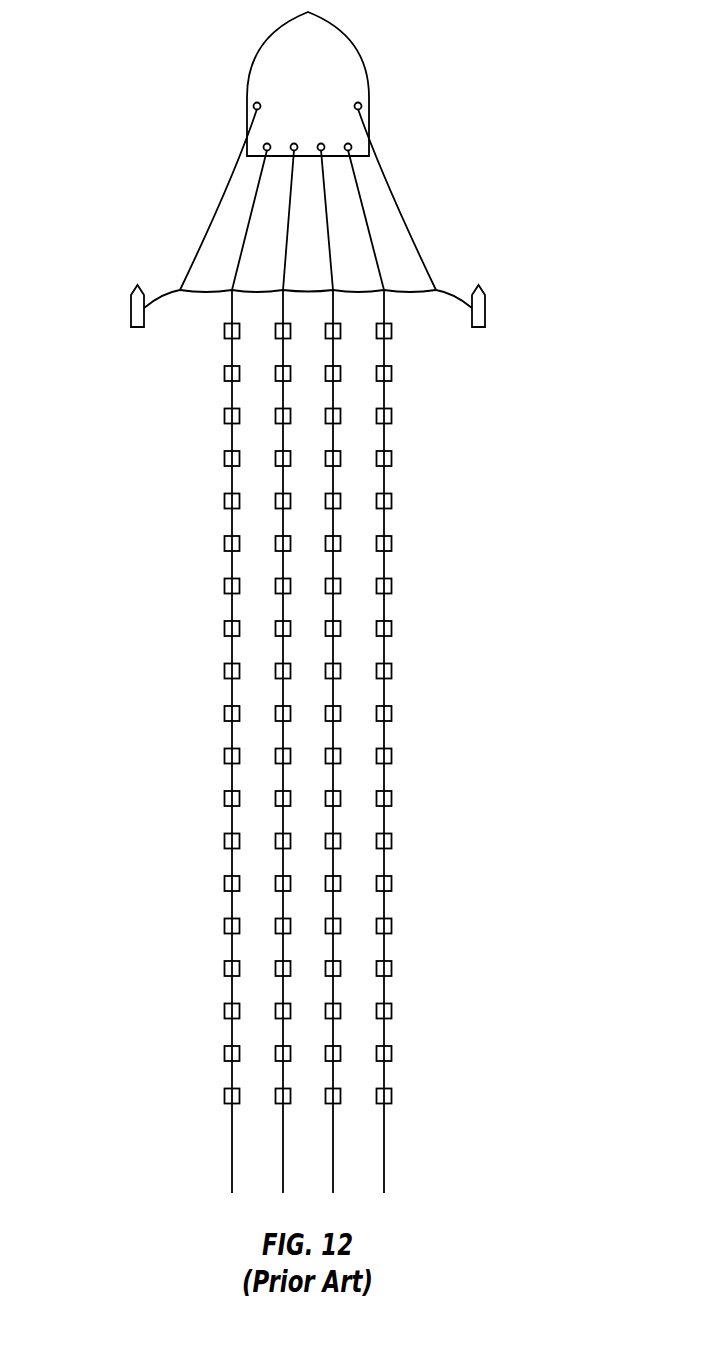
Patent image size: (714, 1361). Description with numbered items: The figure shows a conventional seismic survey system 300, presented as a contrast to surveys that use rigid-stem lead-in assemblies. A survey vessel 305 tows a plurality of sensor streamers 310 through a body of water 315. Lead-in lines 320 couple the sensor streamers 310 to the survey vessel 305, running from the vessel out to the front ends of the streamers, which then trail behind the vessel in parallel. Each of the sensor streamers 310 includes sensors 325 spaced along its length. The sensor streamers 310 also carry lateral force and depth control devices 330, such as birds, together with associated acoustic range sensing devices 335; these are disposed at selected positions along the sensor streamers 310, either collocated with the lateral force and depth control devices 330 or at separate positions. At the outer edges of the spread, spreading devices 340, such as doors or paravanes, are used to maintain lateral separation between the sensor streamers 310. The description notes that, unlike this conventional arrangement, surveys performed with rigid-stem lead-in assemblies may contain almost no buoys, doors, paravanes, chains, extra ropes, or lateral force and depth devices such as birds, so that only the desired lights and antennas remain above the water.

The seismic survey system 300 is at (441, 78).
The survey vessel 305 is at (343, 35).
The sensor streamers 310 is at (283, 300).
The body of water 315 is at (205, 92).
The lead-in lines 320 is at (287, 233).
The sensors 325 is at (308, 728).
The lateral force and depth control devices 330 is at (308, 716).
The acoustic range sensing devices 335 is at (308, 727).
The spreading devices 340 is at (131, 310).